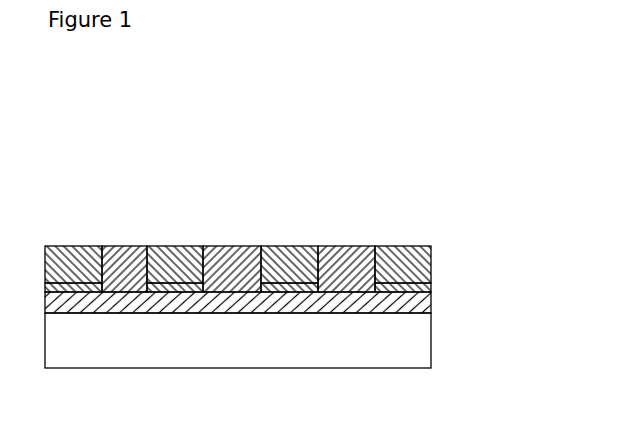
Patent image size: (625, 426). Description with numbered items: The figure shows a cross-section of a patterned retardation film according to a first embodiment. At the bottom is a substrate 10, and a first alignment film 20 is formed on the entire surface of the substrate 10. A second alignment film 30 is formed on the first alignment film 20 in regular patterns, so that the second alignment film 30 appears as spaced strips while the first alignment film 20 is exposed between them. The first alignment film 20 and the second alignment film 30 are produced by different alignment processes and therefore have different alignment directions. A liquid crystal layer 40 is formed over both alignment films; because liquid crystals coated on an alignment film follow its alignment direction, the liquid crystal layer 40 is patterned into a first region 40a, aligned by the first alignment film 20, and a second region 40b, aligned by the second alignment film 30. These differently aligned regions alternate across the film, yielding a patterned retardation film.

The substrate 10 is at (422, 346).
The first alignment film 20 is at (426, 301).
The second alignment film 30 is at (432, 285).
The liquid crystal layer 40 is at (363, 138).
The first region 40a is at (347, 256).
The second region 40b is at (69, 258).